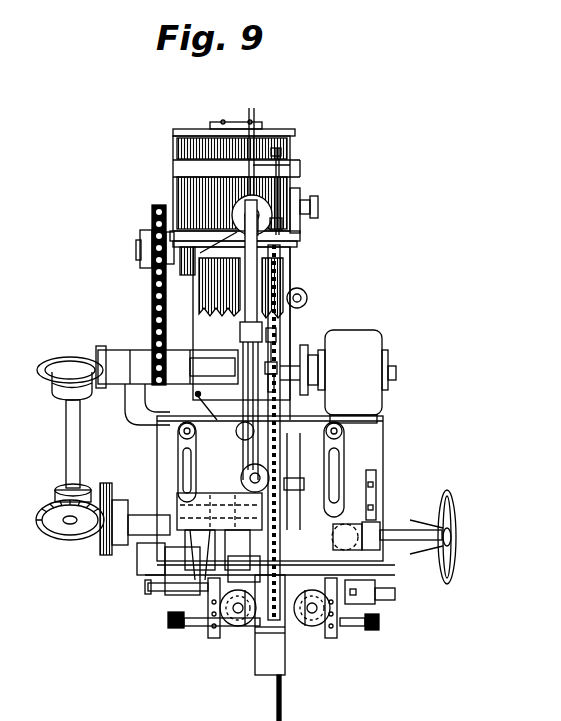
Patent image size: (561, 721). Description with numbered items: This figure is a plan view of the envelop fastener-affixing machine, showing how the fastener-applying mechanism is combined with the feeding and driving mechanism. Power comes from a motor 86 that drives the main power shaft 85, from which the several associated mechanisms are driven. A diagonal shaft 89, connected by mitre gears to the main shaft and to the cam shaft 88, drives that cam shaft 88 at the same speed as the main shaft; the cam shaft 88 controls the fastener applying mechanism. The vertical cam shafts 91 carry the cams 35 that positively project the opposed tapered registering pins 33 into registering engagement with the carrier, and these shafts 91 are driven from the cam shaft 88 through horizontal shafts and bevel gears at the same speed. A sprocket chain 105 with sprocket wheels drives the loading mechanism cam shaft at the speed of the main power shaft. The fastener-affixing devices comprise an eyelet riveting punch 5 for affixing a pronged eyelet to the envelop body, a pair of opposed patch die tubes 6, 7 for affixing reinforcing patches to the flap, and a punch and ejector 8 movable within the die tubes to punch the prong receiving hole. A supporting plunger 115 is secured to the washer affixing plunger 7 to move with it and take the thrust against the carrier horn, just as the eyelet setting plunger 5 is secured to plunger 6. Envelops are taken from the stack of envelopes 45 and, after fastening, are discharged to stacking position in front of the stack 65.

The stack 65 is at (284, 156).
The stack of envelopes 45 is at (270, 272).
The sprocket chain 105 is at (152, 311).
The motor 86 is at (356, 342).
The main power shaft 85 is at (396, 374).
The diagonal shaft 89 is at (68, 442).
The cam shaft 88 is at (96, 524).
The patch die tube 7 is at (252, 567).
The patch die tube 6 is at (378, 594).
The punch and ejector 8 is at (170, 588).
The plunger 115 is at (192, 626).
The vertical cam shaft 91 is at (228, 620).
The cam 35 is at (236, 626).
The registering pin 33 is at (246, 626).
The eyelet riveting punch 5 is at (350, 627).